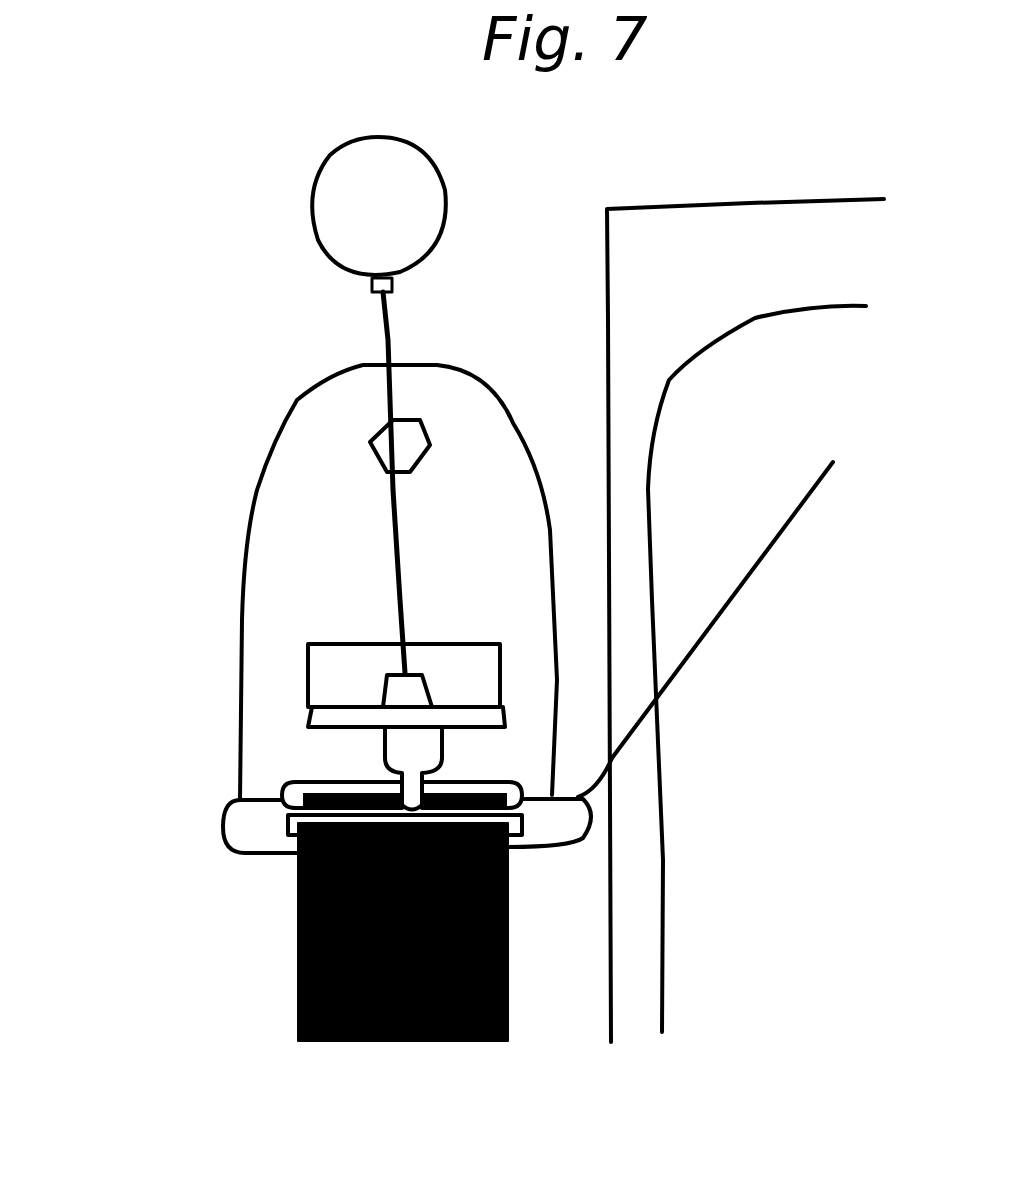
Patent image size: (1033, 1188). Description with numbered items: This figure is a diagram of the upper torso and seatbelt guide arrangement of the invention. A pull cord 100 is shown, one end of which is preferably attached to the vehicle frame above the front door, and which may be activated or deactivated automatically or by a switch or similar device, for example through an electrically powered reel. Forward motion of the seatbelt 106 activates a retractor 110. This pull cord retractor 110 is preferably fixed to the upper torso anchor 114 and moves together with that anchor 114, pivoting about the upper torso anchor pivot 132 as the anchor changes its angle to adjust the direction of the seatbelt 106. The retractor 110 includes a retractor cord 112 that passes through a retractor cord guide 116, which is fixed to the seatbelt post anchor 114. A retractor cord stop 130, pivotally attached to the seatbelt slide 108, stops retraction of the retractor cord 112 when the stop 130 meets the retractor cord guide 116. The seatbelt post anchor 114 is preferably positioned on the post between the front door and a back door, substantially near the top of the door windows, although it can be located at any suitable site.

The pull cord 100 is at (718, 617).
The seatbelt 106 is at (297, 967).
The seatbelt slide 108 is at (243, 833).
The retractor 110 is at (379, 214).
The retractor cord 112 is at (393, 345).
The upper torso anchor 114 is at (295, 527).
The retractor cord guide 116 is at (335, 682).
The retractor cord stop 130 is at (396, 748).
The upper torso anchor pivot 132 is at (415, 445).